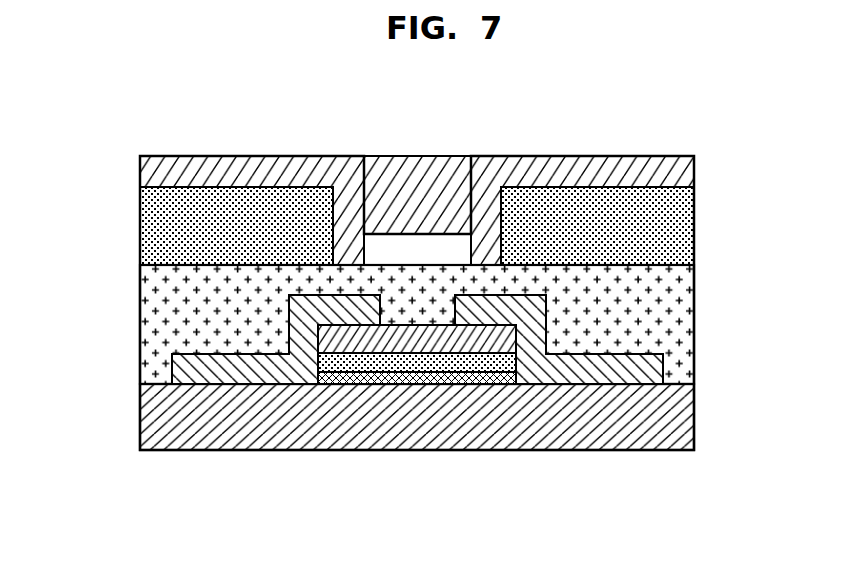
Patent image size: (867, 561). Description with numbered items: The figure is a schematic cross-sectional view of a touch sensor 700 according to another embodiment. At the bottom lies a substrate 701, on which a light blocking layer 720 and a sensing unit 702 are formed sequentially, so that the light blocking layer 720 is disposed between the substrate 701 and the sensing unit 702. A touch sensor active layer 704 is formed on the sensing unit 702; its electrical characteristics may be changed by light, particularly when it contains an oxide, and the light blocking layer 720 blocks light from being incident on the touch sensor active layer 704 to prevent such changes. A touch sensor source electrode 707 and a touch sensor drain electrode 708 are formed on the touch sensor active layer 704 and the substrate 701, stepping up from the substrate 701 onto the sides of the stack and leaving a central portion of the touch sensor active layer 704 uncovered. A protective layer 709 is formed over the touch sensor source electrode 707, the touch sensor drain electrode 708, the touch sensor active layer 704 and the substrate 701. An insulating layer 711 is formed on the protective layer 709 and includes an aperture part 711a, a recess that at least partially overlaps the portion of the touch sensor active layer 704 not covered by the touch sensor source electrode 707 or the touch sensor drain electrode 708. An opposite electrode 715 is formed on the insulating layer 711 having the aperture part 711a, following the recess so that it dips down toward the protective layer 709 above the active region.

The touch sensor 700 is at (627, 116).
The substrate 701 is at (683, 424).
The sensing unit 702 is at (463, 363).
The touch sensor active layer 704 is at (343, 348).
The touch sensor source electrode 707 is at (178, 375).
The touch sensor drain electrode 708 is at (648, 373).
The protective layer 709 is at (683, 302).
The insulating layer 711 is at (155, 224).
The aperture part 711a is at (334, 213).
The opposite electrode 715 is at (683, 176).
The light blocking layer 720 is at (405, 385).